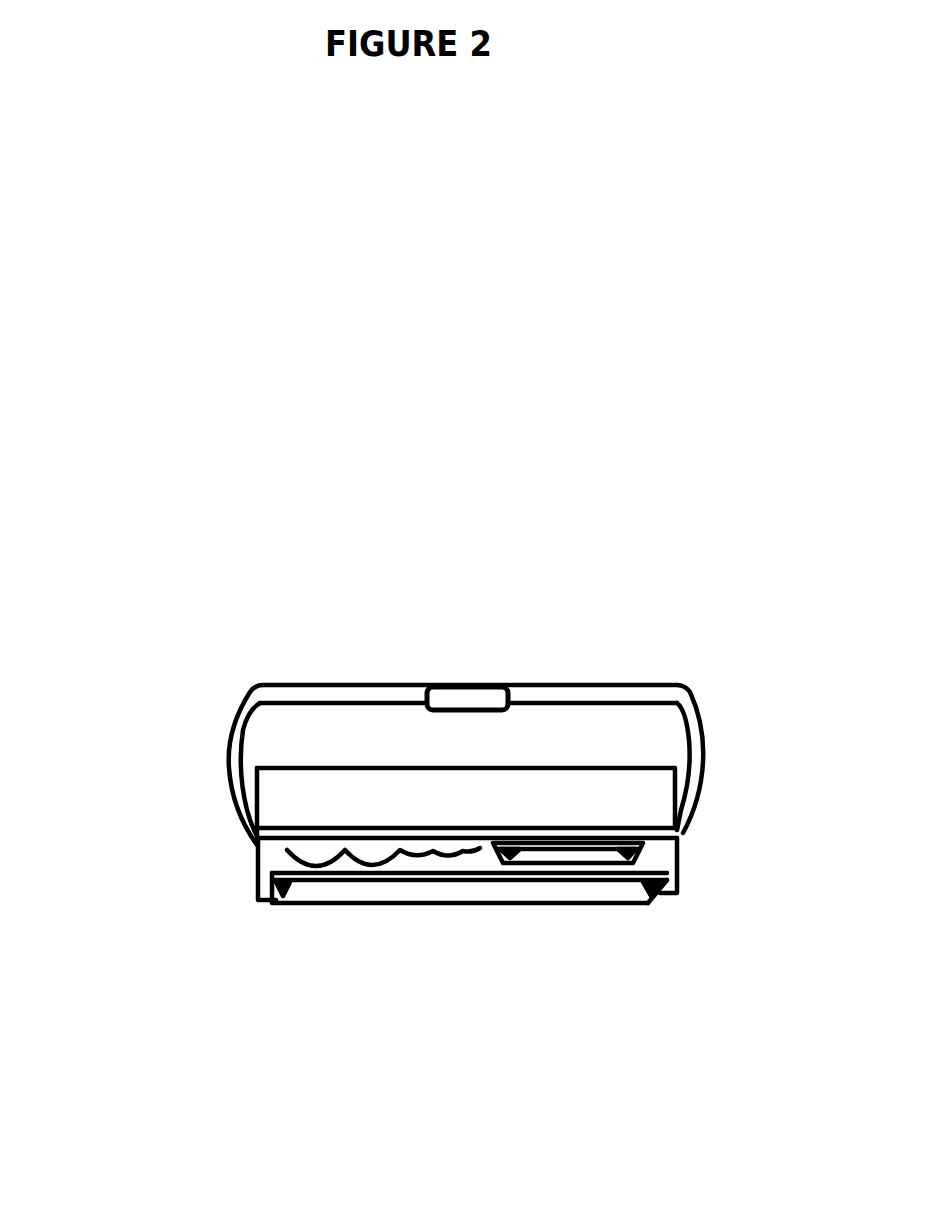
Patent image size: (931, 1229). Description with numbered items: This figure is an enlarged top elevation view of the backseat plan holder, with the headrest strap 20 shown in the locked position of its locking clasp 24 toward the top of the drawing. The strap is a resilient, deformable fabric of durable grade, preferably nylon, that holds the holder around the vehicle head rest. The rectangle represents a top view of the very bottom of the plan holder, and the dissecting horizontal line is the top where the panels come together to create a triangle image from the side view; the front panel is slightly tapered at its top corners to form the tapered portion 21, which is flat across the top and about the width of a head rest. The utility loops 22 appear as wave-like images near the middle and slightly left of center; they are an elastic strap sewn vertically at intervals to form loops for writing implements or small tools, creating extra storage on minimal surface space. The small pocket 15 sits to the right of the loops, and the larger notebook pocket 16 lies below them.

The pocket 15 is at (565, 857).
The notebook pocket 16 is at (437, 902).
The headrest strap 20 is at (693, 712).
The tapered portion 21 is at (325, 799).
The utility loops 22 is at (290, 852).
The locking clasp 24 is at (469, 690).